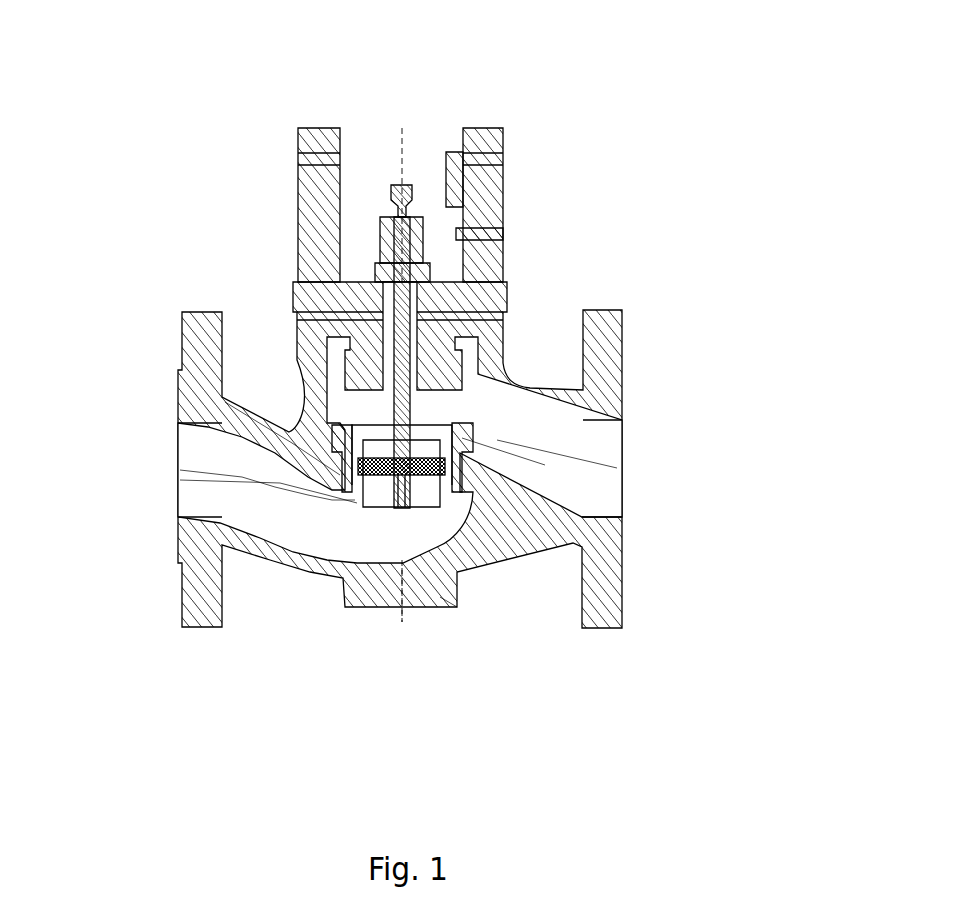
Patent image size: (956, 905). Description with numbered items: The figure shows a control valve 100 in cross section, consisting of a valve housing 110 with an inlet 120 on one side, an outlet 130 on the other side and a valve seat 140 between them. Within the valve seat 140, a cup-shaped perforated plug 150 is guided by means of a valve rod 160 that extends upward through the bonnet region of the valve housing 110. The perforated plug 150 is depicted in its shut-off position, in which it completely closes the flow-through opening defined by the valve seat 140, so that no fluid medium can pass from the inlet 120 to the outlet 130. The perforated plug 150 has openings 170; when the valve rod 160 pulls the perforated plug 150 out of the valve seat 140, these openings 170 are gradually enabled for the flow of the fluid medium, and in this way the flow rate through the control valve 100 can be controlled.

The control valve 100 is at (515, 67).
The valve housing 110 is at (318, 207).
The inlet 120 is at (180, 470).
The outlet 130 is at (623, 468).
The valve seat 140 is at (447, 445).
The cup-shaped perforated plug 150 is at (447, 512).
The valve rod 160 is at (408, 265).
The openings 170 is at (403, 600).